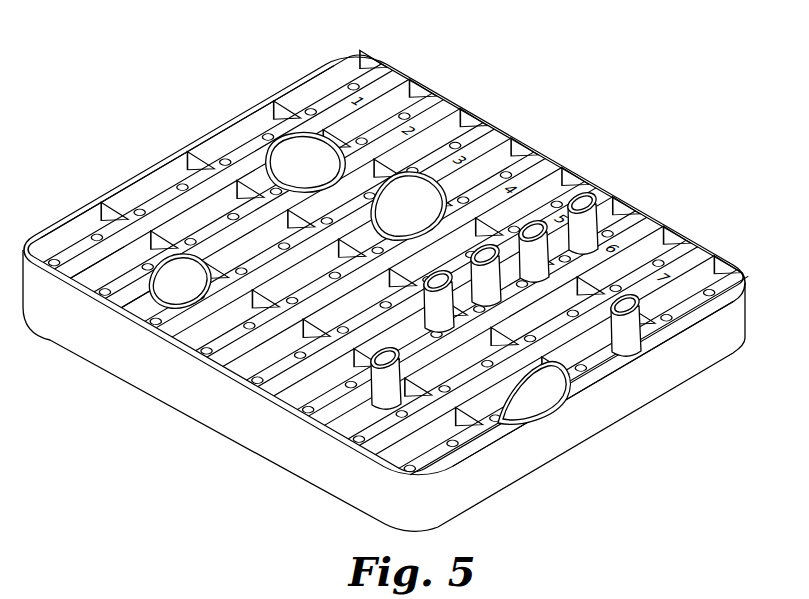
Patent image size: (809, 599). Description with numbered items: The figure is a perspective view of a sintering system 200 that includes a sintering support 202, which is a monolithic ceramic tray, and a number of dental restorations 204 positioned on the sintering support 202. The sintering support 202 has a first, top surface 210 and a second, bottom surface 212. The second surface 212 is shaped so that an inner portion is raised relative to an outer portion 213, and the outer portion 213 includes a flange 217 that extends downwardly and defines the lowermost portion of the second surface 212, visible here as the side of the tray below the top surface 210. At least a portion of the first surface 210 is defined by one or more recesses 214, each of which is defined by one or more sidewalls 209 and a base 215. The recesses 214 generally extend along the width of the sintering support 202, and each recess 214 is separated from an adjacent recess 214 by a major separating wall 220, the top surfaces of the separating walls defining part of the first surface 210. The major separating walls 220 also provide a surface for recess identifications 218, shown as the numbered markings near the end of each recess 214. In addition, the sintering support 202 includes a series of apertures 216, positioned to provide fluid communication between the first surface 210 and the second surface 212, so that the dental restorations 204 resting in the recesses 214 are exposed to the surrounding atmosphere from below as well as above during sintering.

The sintering system 200 is at (666, 76).
The sintering support 202 is at (635, 182).
The dental restorations 204 is at (415, 182).
The sidewalls 209 is at (411, 96).
The first, top surface 210 is at (149, 158).
The second, bottom surface 212 is at (582, 452).
The outer portion 213 is at (645, 414).
The recesses 214 is at (134, 300).
The base 215 is at (487, 165).
The apertures 216 is at (273, 380).
The flange 217 is at (728, 344).
The recess identifications 218 is at (666, 276).
The major separating wall 220 is at (368, 449).